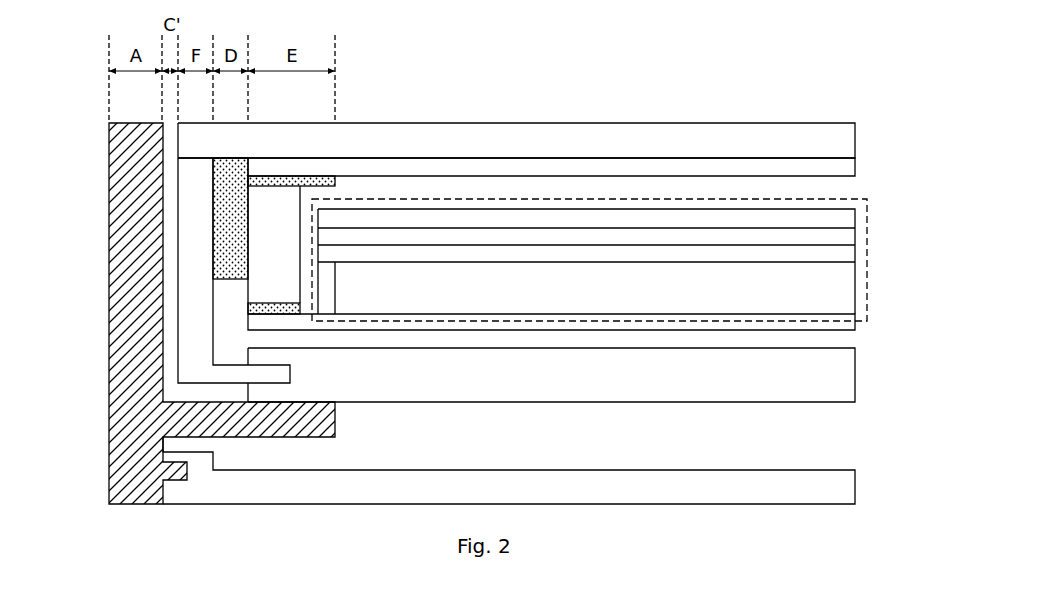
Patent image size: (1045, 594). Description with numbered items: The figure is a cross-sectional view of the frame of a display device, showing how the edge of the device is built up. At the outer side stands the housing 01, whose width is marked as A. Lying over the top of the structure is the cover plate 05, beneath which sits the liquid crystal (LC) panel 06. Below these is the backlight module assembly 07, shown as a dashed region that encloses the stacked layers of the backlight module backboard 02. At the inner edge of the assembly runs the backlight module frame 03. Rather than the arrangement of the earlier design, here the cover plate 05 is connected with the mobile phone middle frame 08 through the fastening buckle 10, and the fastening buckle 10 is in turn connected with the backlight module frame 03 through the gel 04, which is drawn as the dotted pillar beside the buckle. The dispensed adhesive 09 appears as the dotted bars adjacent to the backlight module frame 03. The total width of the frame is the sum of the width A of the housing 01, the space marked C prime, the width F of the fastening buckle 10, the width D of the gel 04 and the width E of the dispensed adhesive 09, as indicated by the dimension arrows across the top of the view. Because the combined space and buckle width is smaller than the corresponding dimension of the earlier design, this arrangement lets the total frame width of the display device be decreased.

The housing 01 is at (127, 363).
The backlight module backboard 02 is at (825, 323).
The backlight module frame 03 is at (290, 207).
The gel 04 is at (228, 258).
The cover plate 05 is at (452, 143).
The liquid crystal (LC) panel 06 is at (682, 168).
The backlight module assembly 07 is at (555, 195).
The mobile phone middle frame 08 is at (823, 393).
The dispensed adhesive 09 is at (323, 185).
The fastening buckle 10 is at (192, 310).